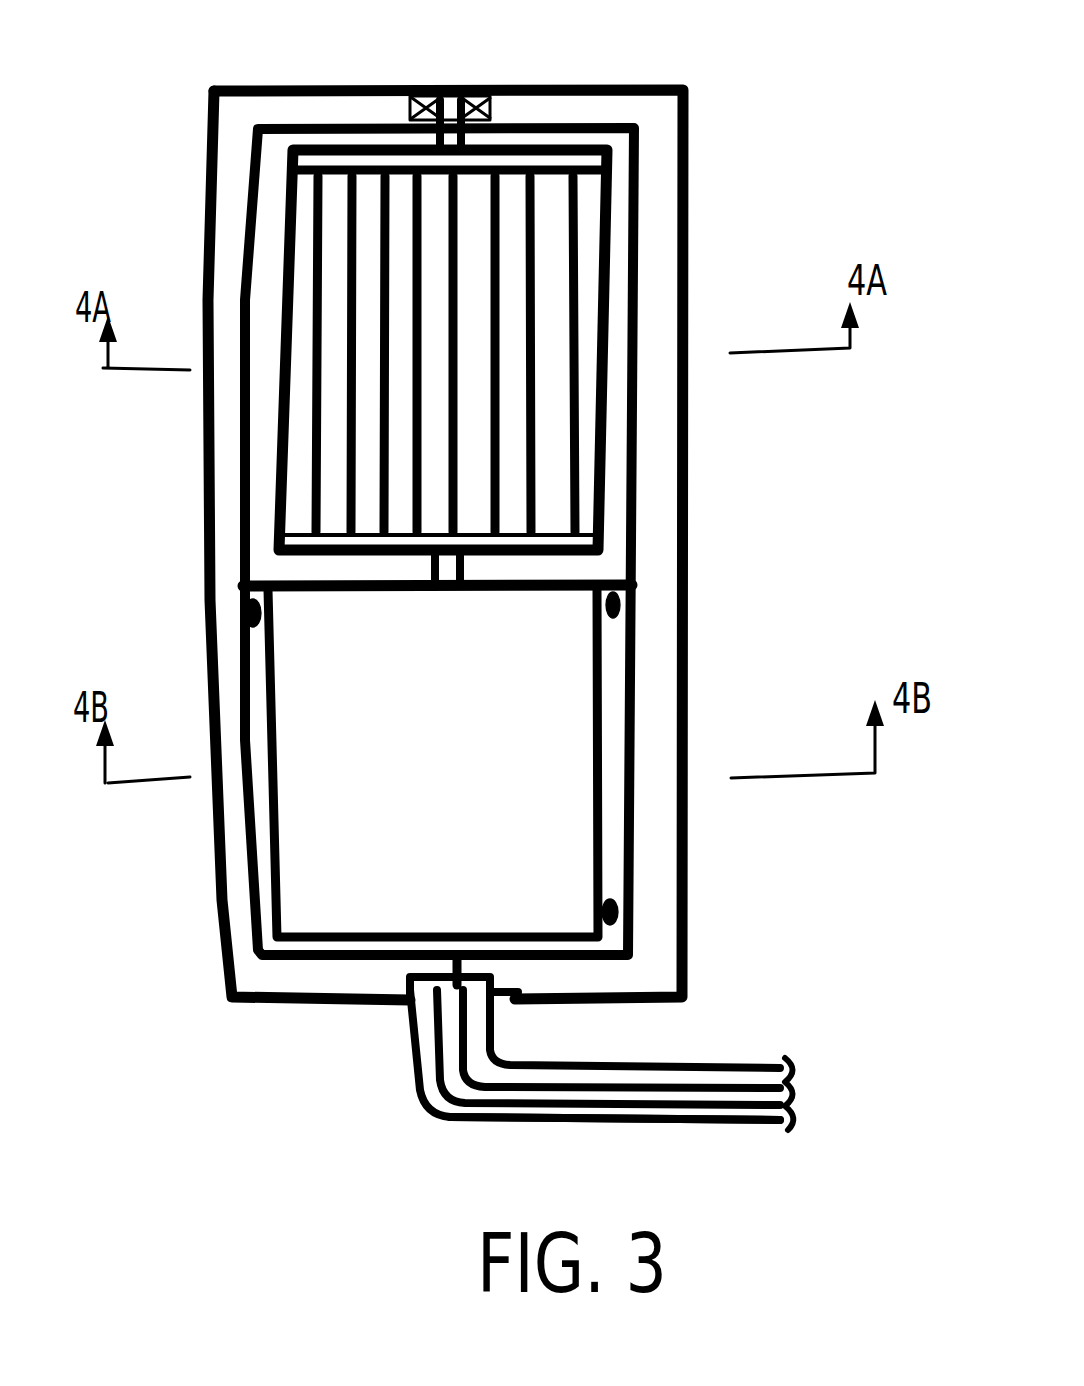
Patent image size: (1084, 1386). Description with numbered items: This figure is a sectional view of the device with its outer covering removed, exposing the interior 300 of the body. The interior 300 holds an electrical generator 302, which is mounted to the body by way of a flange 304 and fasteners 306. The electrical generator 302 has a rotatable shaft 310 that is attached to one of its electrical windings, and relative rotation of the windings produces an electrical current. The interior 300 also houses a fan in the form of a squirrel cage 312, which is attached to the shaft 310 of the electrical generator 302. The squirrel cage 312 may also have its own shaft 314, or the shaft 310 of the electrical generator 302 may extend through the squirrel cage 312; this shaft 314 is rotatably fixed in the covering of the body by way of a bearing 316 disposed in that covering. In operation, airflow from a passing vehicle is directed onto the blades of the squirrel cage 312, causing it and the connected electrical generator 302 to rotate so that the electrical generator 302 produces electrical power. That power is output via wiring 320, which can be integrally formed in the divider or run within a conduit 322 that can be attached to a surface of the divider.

The interior 300 is at (615, 345).
The electrical generator 302 is at (560, 680).
The flange 304 is at (615, 717).
The fasteners 306 is at (620, 907).
The rotatable shaft 310 is at (462, 575).
The squirrel cage 312 is at (612, 215).
The shaft 314 is at (470, 140).
The bearing 316 is at (475, 88).
The wiring 320 is at (675, 1070).
The conduit 322 is at (618, 1120).